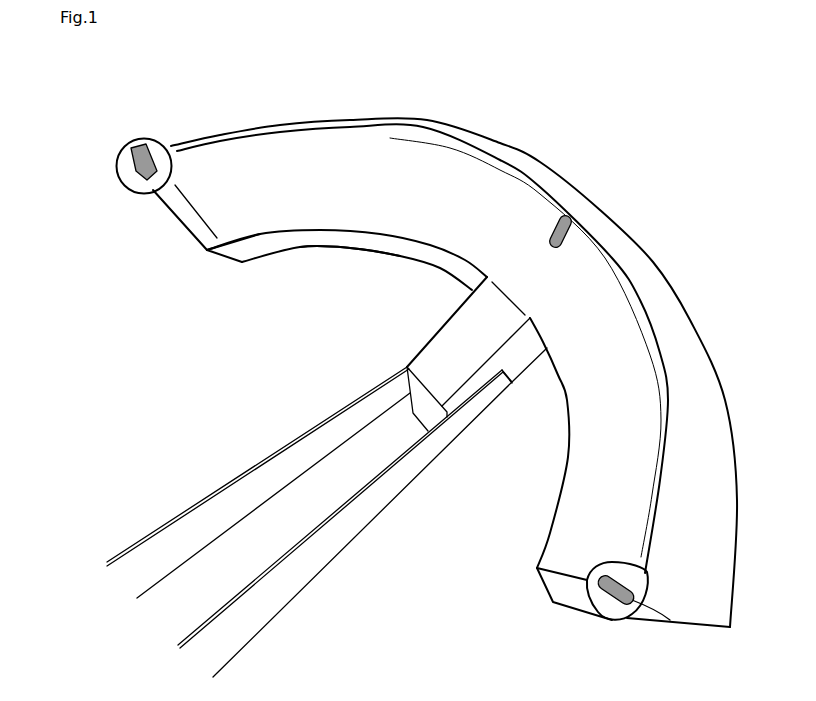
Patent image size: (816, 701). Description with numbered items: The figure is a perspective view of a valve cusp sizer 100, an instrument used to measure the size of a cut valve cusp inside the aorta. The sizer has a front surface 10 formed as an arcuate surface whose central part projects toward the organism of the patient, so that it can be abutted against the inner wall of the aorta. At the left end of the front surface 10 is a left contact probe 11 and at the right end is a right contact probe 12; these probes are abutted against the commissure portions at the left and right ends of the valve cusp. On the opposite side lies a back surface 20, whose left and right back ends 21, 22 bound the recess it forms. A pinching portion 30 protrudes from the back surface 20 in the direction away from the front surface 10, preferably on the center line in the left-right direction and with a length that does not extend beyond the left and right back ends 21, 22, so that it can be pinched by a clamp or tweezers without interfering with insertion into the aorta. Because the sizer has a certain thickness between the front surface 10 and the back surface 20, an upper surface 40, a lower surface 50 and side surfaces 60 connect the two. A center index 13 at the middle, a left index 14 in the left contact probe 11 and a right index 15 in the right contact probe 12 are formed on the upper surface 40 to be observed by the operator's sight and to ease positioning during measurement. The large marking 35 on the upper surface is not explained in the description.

The valve cusp sizer 100 is at (518, 131).
The front surface 10 is at (683, 330).
The left contact probe 11 is at (128, 150).
The right contact probe 12 is at (645, 600).
The center index 13 is at (568, 216).
The left index 14 is at (140, 149).
The right index 15 is at (623, 592).
The back surface 20 is at (285, 242).
The left back end 21 is at (207, 254).
The right back end 22 is at (535, 568).
The pinching portion 30 is at (457, 334).
The marking 35 is at (533, 275).
The upper surface 40 is at (570, 460).
The lower surface 50 is at (345, 254).
The side surfaces 60 is at (187, 224).